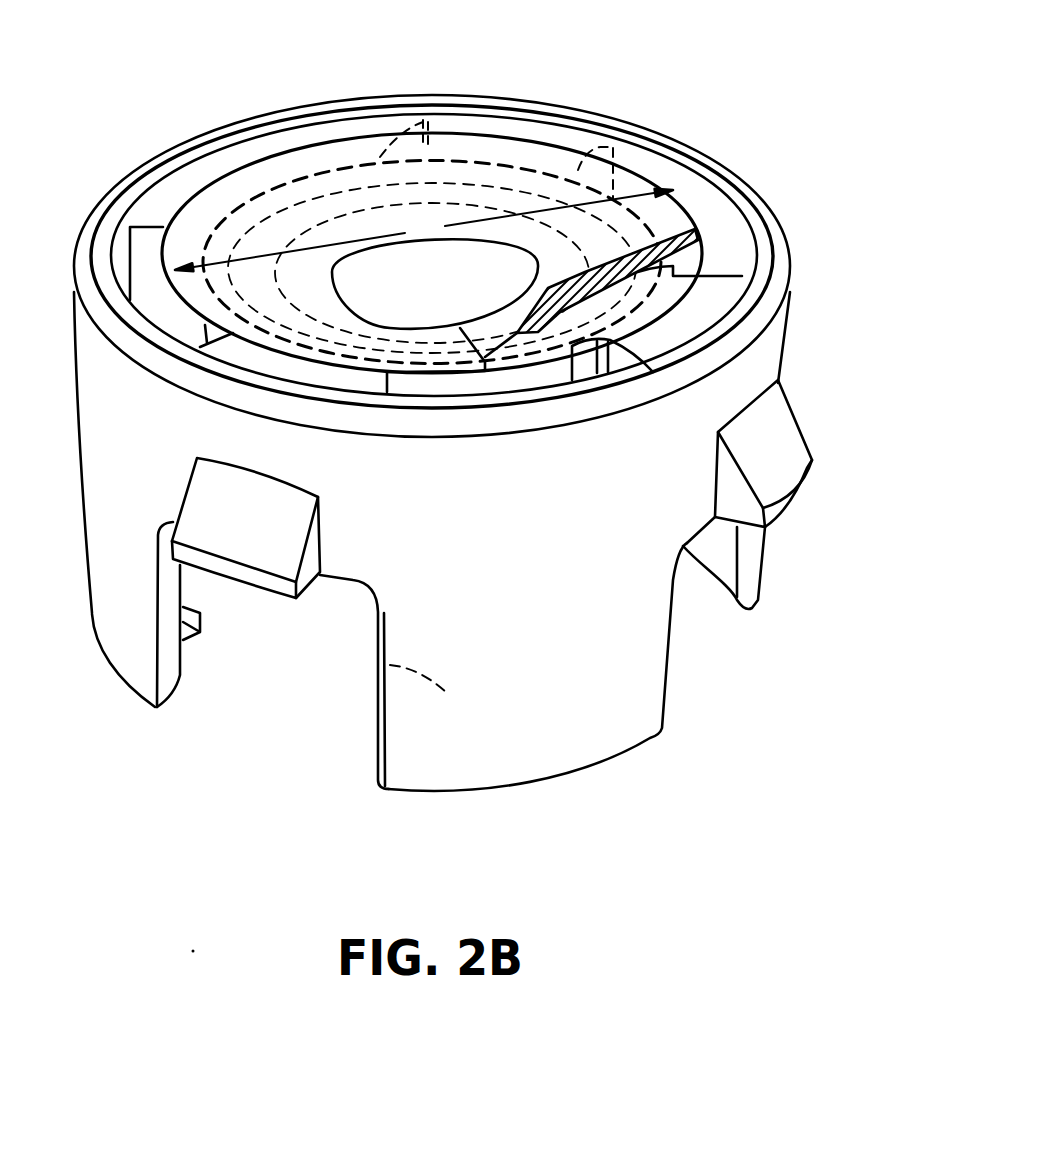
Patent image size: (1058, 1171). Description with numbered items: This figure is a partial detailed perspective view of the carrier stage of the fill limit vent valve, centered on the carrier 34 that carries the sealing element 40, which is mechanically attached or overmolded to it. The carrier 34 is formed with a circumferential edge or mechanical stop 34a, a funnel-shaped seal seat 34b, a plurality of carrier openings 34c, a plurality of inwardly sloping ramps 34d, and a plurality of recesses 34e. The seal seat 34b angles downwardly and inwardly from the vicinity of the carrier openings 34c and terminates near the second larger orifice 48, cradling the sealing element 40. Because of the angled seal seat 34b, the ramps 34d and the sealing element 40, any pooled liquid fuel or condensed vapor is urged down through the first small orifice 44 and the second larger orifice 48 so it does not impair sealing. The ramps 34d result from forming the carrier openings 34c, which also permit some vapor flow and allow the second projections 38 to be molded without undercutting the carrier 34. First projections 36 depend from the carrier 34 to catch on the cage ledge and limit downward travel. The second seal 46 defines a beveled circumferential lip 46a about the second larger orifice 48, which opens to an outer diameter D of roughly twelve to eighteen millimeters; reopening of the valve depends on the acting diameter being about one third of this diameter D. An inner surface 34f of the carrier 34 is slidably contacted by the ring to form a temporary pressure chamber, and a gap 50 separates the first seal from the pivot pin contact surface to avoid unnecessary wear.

The carrier 34 is at (573, 722).
The circumferential edge or mechanical stop 34a is at (762, 235).
The seal seat 34b is at (583, 300).
The carrier openings 34c is at (567, 362).
The ramps 34d is at (280, 357).
The recesses 34e is at (248, 696).
The inner surface 34f is at (730, 537).
The first projections 36 is at (258, 583).
The second projections 38 is at (203, 633).
The sealing element 40 is at (465, 183).
The first small orifice 44 is at (427, 330).
The second seal 46 is at (527, 143).
The circumferential lip 46a is at (675, 180).
The second larger orifice 48 is at (376, 278).
The gap 50 is at (378, 662).
The outer diameter D is at (424, 230).